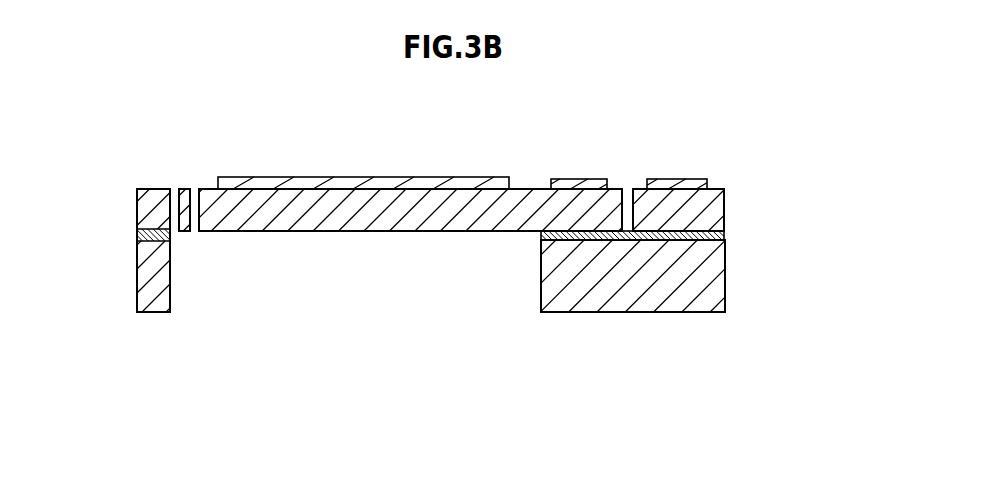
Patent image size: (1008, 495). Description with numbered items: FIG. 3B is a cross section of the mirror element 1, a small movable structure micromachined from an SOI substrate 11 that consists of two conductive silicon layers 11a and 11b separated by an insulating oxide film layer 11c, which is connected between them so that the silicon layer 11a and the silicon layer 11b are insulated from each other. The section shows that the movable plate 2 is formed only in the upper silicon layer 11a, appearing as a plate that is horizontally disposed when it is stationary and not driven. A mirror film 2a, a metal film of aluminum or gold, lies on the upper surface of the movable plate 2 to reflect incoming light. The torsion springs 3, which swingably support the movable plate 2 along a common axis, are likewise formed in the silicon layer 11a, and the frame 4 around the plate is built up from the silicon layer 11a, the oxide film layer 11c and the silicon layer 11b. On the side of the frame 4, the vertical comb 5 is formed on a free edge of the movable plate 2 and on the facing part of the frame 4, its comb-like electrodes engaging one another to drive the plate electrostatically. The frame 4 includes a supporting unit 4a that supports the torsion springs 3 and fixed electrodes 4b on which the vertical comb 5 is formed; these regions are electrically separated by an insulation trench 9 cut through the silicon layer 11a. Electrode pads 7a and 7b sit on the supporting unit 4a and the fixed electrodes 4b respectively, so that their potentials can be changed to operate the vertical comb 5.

The mirror element 1 is at (99, 195).
The movable plate 2 is at (403, 208).
The mirror film 2a is at (350, 187).
The torsion springs 3 is at (527, 217).
The frame 4 is at (133, 287).
The supporting unit 4a is at (594, 197).
The fixed electrodes 4b is at (152, 189).
The vertical comb 5 is at (194, 249).
The electrode pad 7a is at (566, 179).
The electrode pad 7b is at (680, 178).
The insulation trenches 9 is at (627, 207).
The SOI substrate 11 is at (692, 247).
The silicon layer 11a is at (680, 218).
The silicon layer 11b is at (667, 276).
The oxide film layer 11c is at (713, 235).